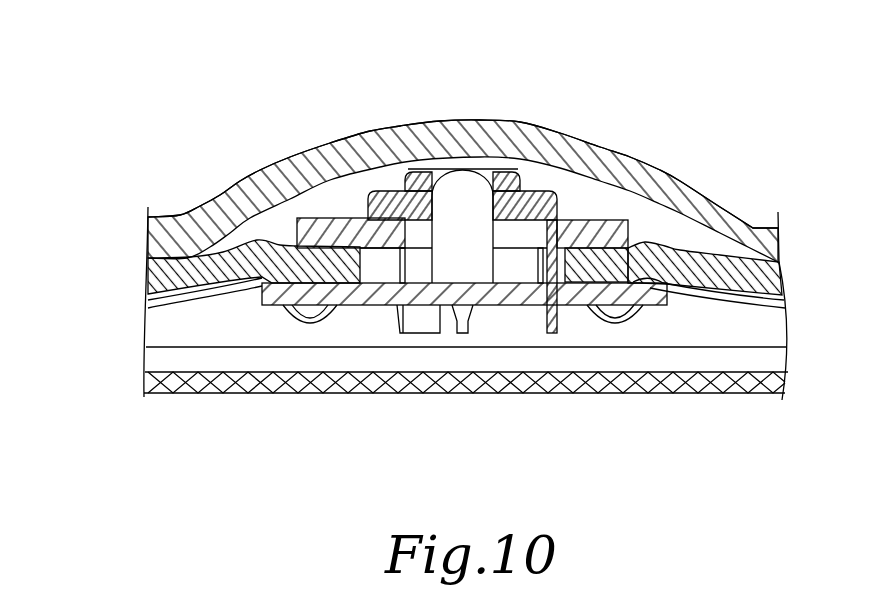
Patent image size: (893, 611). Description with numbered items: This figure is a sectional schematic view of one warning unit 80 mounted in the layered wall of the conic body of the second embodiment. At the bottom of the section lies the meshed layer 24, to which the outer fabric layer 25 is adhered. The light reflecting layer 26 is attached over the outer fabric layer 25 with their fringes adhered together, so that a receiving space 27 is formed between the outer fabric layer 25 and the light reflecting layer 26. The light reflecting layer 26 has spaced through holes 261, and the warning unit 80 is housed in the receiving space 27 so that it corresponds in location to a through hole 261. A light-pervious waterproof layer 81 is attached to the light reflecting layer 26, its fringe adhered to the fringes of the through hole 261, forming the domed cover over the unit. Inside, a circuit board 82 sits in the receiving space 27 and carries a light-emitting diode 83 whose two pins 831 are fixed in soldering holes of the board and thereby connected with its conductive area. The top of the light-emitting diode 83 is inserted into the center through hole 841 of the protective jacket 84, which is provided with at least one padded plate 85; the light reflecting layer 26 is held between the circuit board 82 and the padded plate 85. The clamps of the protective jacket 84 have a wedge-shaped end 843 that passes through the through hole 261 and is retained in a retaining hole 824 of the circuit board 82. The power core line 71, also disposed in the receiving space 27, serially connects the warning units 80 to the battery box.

The warning unit 80 is at (247, 160).
The waterproof layer 81 is at (168, 237).
The light reflecting layer 26 is at (143, 283).
The through hole 261 is at (567, 276).
The power core line 71 is at (200, 301).
The outer fabric layer 25 is at (167, 357).
The meshed layer 24 is at (751, 372).
The receiving space 27 is at (303, 328).
The circuit board 82 is at (354, 298).
The padded plate 85 is at (353, 217).
The light-emitting diode 83 is at (463, 196).
The center through hole 841 is at (434, 176).
The protective jacket 84 is at (506, 180).
The retaining hole 824 is at (546, 337).
The wedge-shaped end 843 is at (423, 317).
The pin 831 is at (462, 318).